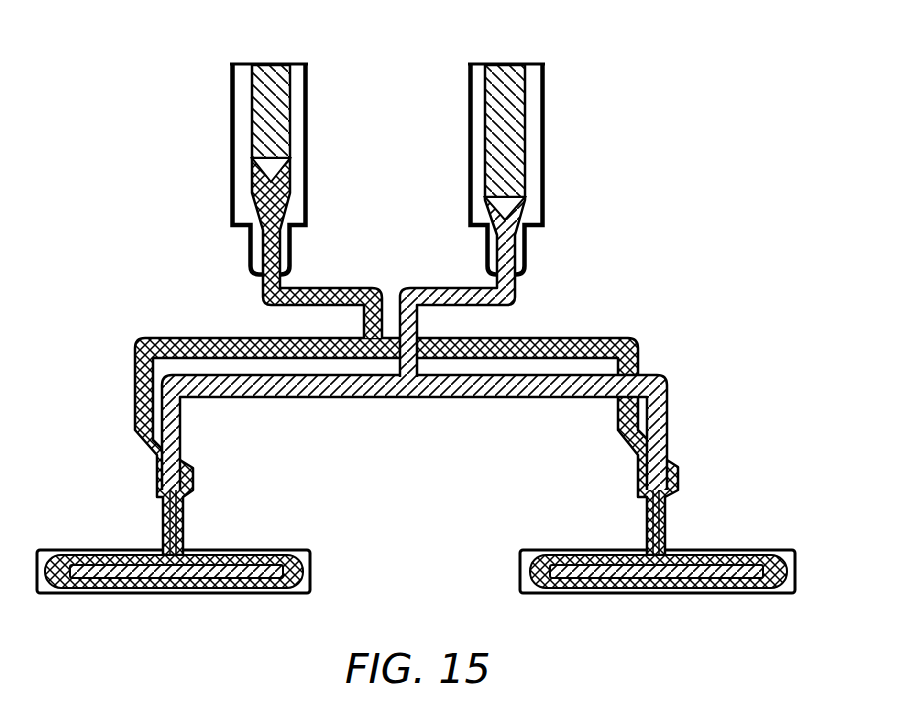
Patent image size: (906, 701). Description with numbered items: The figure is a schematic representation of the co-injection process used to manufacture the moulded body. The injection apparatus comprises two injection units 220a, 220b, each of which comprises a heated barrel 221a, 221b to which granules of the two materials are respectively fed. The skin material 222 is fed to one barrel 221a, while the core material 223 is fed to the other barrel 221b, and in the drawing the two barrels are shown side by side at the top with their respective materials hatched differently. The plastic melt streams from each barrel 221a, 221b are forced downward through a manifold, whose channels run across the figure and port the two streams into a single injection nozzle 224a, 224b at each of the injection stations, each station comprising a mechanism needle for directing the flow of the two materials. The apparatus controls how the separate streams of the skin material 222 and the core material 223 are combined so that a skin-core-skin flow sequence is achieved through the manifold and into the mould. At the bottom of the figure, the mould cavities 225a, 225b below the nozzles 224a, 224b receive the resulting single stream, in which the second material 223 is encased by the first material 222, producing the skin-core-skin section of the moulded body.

The injection unit 220a is at (223, 157).
The injection unit 220b is at (551, 157).
The heated barrel 221a is at (232, 175).
The heated barrel 221b is at (545, 173).
The skin material 222 is at (264, 64).
The core material 223 is at (510, 66).
The injection nozzle 224a is at (163, 520).
The injection nozzle 224b is at (665, 520).
The first mold cavity 225a is at (103, 593).
The second mold cavity 225b is at (730, 593).